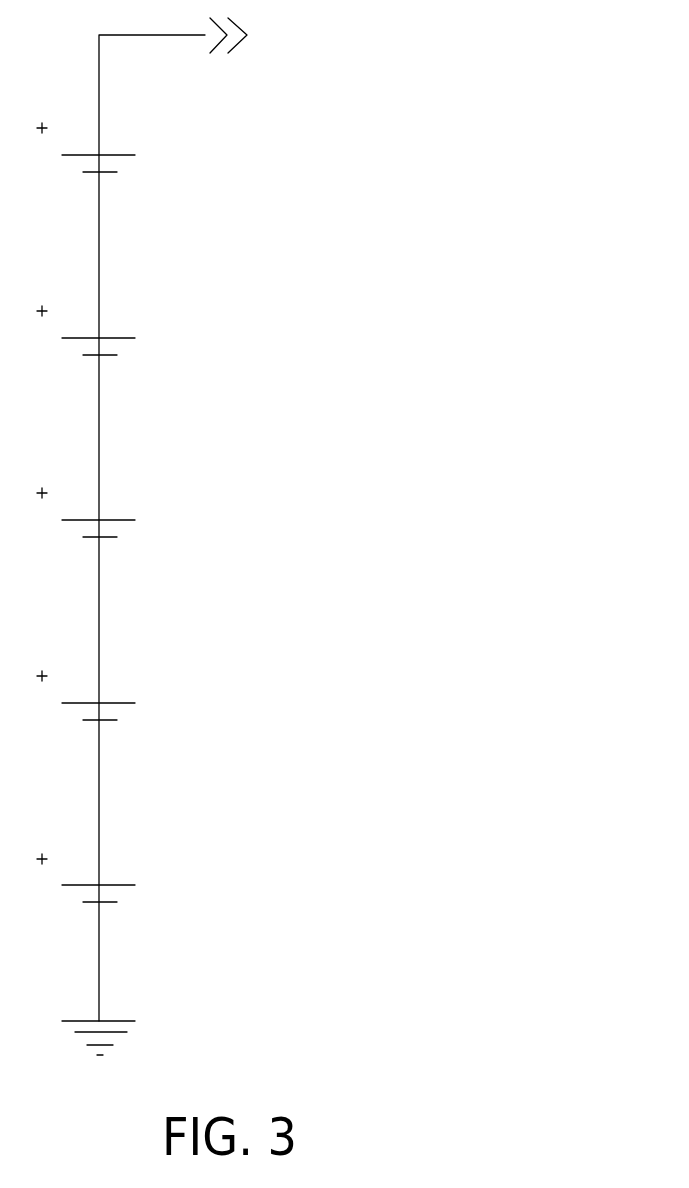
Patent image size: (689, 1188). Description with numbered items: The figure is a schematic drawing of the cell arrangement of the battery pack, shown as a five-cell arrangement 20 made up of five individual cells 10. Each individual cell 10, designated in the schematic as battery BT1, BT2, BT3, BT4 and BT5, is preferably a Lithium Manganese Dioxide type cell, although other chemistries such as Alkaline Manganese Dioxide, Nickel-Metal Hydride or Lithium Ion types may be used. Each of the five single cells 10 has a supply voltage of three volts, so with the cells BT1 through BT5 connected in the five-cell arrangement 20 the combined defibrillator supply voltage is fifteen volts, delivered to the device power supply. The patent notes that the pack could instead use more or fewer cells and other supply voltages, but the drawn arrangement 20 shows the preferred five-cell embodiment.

The individual cell 10 is at (178, 542).
The five-cell arrangement 20 is at (299, 532).
The battery 1 BT1 is at (121, 912).
The battery 2 BT2 is at (121, 729).
The battery 3 BT3 is at (121, 546).
The battery 4 BT4 is at (121, 364).
The battery 5 BT5 is at (121, 188).